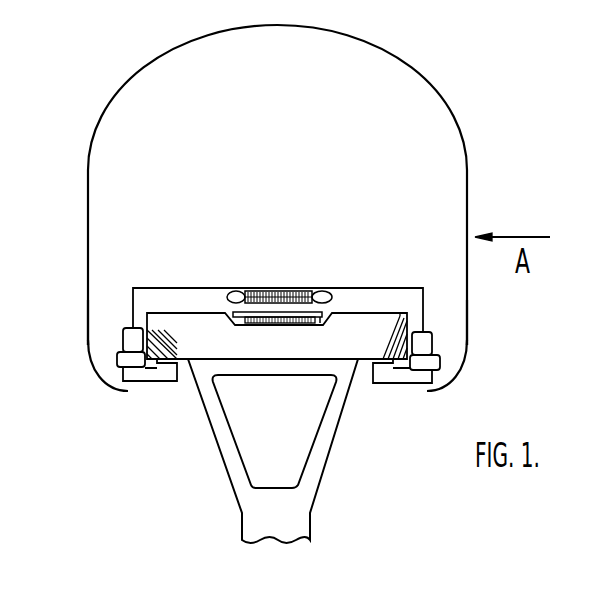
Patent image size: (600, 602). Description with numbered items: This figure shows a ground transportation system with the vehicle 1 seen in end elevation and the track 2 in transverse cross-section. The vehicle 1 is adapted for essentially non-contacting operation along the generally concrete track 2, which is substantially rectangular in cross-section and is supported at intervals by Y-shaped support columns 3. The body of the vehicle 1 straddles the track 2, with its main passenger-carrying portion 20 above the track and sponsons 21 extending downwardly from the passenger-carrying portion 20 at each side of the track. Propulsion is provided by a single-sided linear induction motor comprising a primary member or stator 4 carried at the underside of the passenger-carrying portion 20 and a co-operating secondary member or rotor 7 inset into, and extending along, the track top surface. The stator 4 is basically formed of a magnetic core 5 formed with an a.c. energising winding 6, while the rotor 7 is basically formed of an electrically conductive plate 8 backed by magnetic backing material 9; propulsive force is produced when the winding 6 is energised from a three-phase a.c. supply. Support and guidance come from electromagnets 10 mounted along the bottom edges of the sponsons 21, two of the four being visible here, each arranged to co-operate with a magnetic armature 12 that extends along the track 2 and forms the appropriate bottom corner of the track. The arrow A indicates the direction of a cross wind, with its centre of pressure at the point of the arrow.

The vehicle 1 is at (118, 96).
The passenger-carrying portion 20 is at (95, 162).
The sponsons 21 is at (92, 335).
The track 2 is at (237, 353).
The support columns 3 is at (298, 498).
The stator 4 is at (267, 289).
The magnetic core 5 is at (296, 289).
The a.c. energising winding 6 is at (226, 289).
The rotor 7 is at (290, 325).
The electrically conductive plate 8 is at (320, 321).
The magnetic backing material 9 is at (253, 318).
The electromagnets 10 is at (402, 384).
The magnetic armature 12 is at (152, 324).